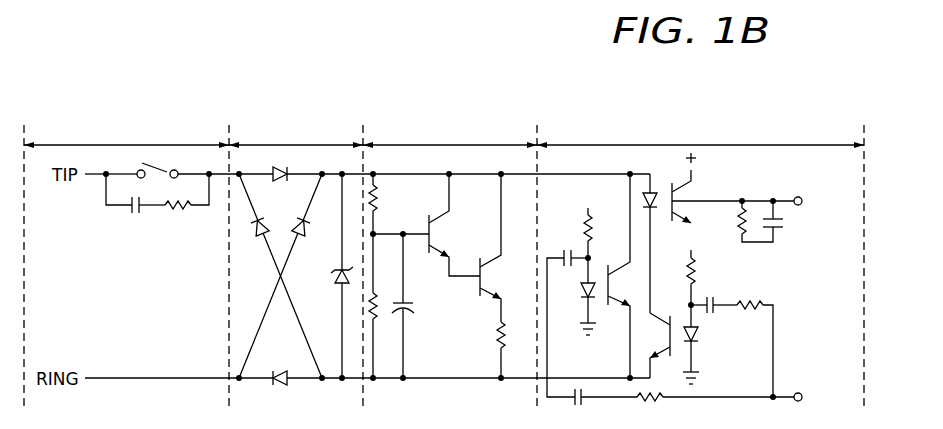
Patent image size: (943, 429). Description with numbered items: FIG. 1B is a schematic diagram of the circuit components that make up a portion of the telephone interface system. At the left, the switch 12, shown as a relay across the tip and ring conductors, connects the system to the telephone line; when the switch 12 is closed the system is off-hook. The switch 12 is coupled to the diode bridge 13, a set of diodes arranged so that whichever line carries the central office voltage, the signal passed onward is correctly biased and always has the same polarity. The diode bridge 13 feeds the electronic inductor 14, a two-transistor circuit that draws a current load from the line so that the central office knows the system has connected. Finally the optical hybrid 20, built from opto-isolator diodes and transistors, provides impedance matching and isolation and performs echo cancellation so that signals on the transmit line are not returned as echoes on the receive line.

The switch 12 is at (125, 145).
The diode bridge 13 is at (294, 144).
The electronic inductor 14 is at (449, 144).
The optical hybrid 20 is at (700, 144).